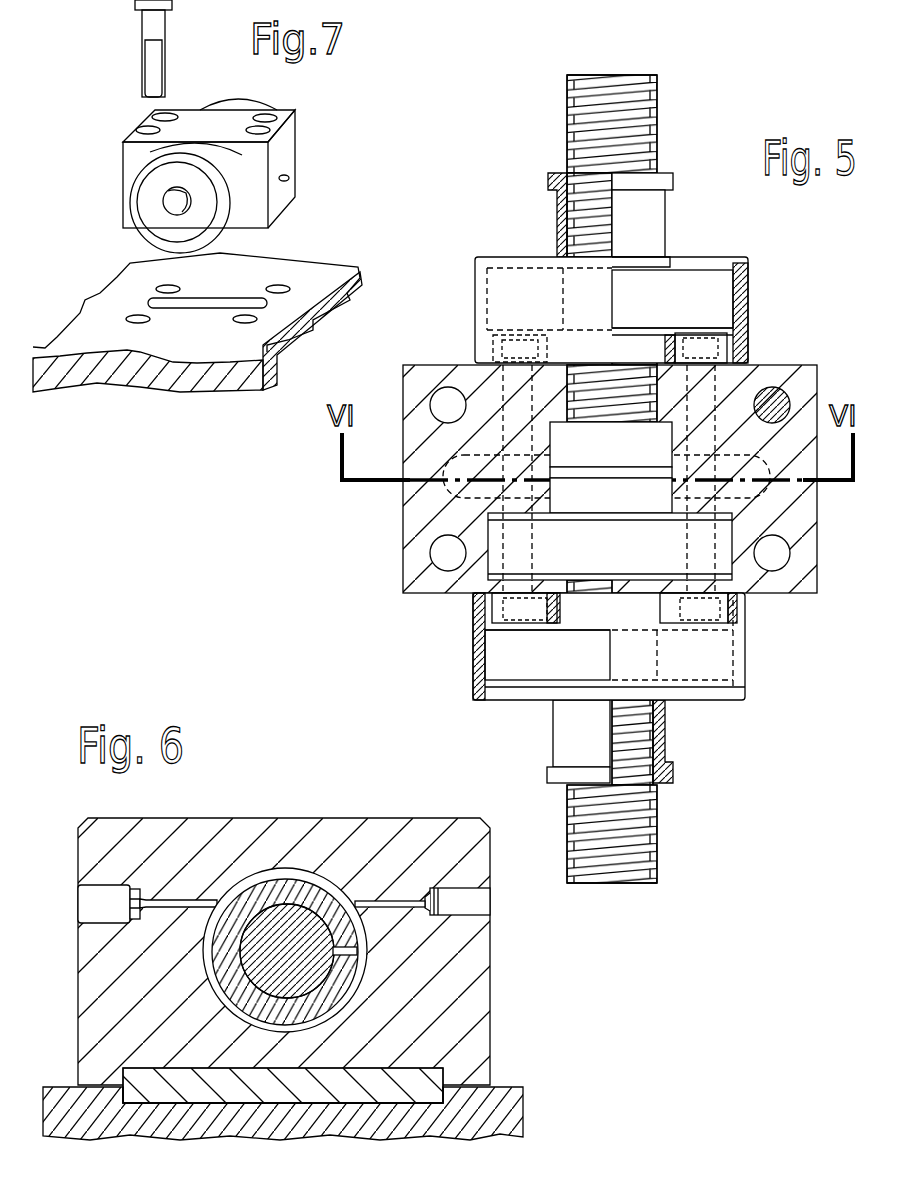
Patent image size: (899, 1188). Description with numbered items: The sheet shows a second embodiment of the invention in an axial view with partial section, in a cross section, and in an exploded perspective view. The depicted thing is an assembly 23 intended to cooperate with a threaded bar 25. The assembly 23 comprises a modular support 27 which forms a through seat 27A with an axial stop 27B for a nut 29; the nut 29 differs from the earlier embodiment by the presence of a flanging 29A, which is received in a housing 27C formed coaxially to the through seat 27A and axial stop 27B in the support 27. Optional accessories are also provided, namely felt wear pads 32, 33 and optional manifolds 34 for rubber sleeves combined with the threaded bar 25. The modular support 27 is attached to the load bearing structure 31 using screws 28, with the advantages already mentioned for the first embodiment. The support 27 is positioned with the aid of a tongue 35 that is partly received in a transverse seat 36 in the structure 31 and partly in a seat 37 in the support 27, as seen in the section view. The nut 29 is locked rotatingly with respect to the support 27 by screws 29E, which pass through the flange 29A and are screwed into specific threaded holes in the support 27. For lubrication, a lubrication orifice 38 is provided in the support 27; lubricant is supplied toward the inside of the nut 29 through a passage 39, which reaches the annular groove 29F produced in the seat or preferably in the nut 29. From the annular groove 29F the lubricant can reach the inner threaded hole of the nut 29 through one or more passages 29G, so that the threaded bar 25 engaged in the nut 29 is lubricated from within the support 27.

In FIG. 5, the assembly 23 is at (441, 355).
In FIG. 6, the assembly 23 is at (196, 806).
In FIG. 5, the threaded bar 25 is at (657, 100).
In FIG. 6, the threaded bar 25 is at (262, 915).
In FIG. 7, the modular support 27 is at (283, 197).
In FIG. 5, the modular support 27 is at (415, 396).
In FIG. 6, the modular support 27 is at (378, 840).
In FIG. 7, the through seat 27A is at (230, 207).
In FIG. 5, the through seat 27A is at (668, 505).
In FIG. 5, the axial stop 27B is at (653, 440).
In FIG. 5, the housing 27C is at (490, 548).
In FIG. 7, the screws 28 is at (140, 50).
In FIG. 5, the screws 28 is at (775, 386).
In FIG. 7, the nut 29 is at (150, 194).
In FIG. 5, the nut 29 is at (635, 500).
In FIG. 6, the nut 29 is at (300, 873).
In FIG. 5, the flanging 29A is at (723, 550).
In FIG. 5, the screws 29E is at (476, 617).
In FIG. 5, the annular groove 29F is at (622, 472).
In FIG. 6, the annular groove 29F is at (357, 985).
In FIG. 6, the passages 29G is at (357, 951).
In FIG. 7, the structure 31 is at (112, 298).
In FIG. 6, the structure 31 is at (512, 1080).
In FIG. 5, the felt wear pad 32 is at (712, 293).
In FIG. 5, the felt wear pad 33 is at (497, 665).
In FIG. 5, the manifolds 34 is at (652, 213).
In FIG. 5, the tongue 35 is at (402, 512).
In FIG. 6, the tongue 35 is at (423, 1072).
In FIG. 7, the transverse seat 36 is at (200, 300).
In FIG. 6, the transverse seat 36 is at (413, 1107).
In FIG. 6, the seat 37 is at (143, 1088).
In FIG. 7, the lubrication orifice 38 is at (288, 180).
In FIG. 6, the lubrication orifice 38 is at (472, 905).
In FIG. 6, the passage 39 is at (405, 912).